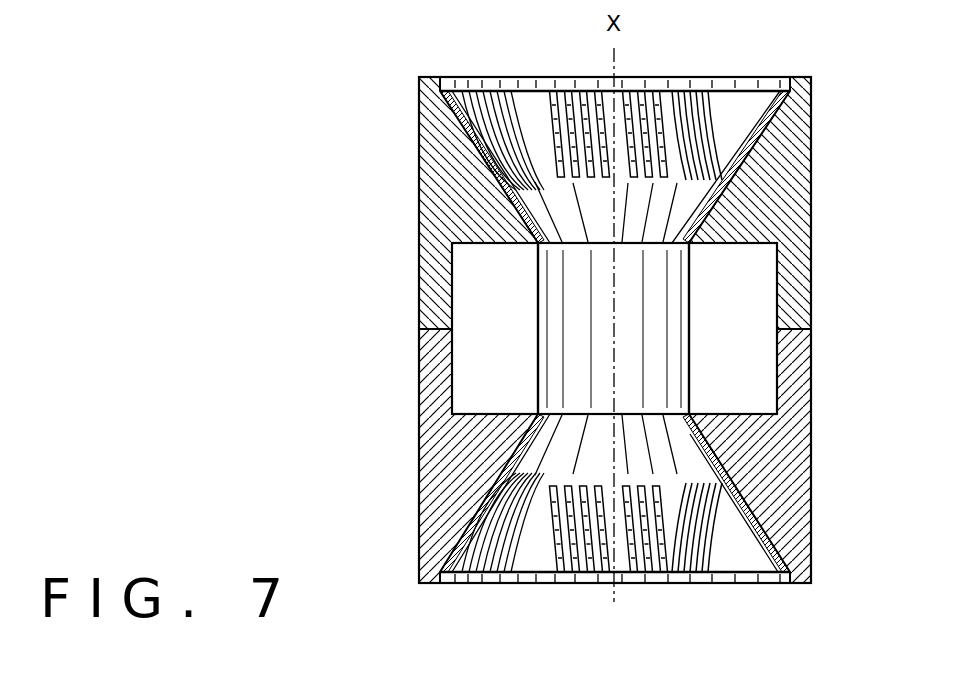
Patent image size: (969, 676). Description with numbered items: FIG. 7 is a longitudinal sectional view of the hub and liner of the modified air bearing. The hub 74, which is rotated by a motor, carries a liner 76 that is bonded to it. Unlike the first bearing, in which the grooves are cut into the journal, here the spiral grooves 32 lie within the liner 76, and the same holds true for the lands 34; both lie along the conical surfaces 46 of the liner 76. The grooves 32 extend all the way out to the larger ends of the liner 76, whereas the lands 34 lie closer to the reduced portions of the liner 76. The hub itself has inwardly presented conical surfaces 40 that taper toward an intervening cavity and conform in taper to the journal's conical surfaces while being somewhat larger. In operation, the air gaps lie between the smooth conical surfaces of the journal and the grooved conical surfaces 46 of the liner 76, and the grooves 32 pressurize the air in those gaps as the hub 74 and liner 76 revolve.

The spiral grooves 32 is at (586, 565).
The frustoconical lands 34 is at (568, 462).
The conical surfaces 40 is at (715, 455).
The surfaces of the liner 46 is at (690, 460).
The hub 74 is at (811, 275).
The liner 76 is at (763, 498).